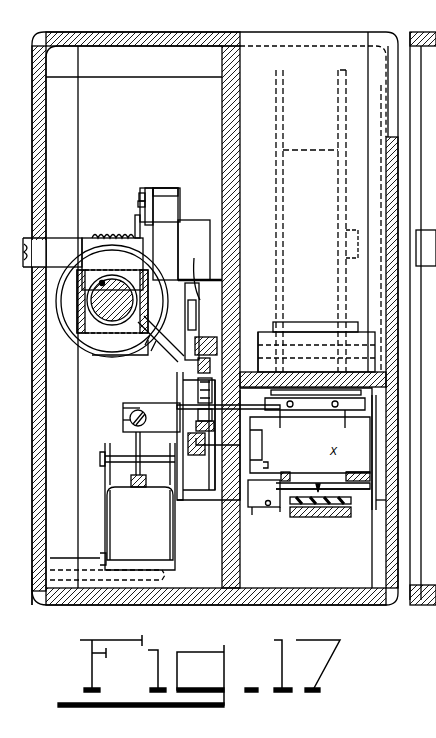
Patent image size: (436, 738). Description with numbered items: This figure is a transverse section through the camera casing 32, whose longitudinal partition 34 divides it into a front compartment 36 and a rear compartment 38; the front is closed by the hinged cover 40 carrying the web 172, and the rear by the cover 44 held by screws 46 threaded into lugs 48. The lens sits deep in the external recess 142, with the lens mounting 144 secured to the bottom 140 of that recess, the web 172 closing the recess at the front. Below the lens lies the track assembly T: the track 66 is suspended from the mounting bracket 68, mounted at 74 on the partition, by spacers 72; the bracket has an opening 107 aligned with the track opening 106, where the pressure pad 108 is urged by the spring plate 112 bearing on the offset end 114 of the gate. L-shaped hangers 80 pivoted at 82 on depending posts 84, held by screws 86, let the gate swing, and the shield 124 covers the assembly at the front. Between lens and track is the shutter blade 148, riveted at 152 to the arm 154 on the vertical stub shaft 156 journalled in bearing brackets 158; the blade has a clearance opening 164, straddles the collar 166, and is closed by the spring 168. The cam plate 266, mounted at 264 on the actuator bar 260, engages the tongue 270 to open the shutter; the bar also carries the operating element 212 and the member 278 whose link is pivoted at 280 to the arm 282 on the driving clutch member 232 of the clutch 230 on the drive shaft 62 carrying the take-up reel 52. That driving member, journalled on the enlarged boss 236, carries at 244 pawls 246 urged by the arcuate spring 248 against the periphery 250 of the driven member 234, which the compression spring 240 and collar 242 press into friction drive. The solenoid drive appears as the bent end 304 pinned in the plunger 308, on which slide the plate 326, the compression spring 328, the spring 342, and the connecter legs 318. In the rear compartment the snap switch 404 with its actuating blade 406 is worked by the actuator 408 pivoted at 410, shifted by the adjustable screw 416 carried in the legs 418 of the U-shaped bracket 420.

The casing 32 is at (178, 33).
The cover 44 is at (36, 36).
The cover 40 is at (392, 38).
The web 172 is at (393, 205).
The longitudinal partition 34 is at (242, 252).
The front compartment 36 is at (360, 575).
The screws 46 is at (60, 605).
The rear compartment 38 is at (98, 90).
The film take-up reel 52 is at (278, 70).
The external recess 142 is at (352, 95).
The lens mounting 144 is at (307, 320).
The bottom of external recess 140 is at (252, 350).
The drive shaft 62 is at (60, 247).
The driven clutch member 234 is at (128, 236).
The compression spring 240 is at (100, 232).
The collar 242 is at (122, 236).
The pivot 244 is at (138, 196).
The pawls 246 is at (138, 204).
The arcuate spring 248 is at (147, 190).
The clutch 230 is at (156, 180).
The driving clutch member 232 is at (176, 197).
The periphery 250 is at (155, 233).
The enlarged boss 236 is at (202, 225).
The arm 282 is at (178, 268).
The member 278 is at (195, 262).
The pivotal connection 280 is at (200, 285).
The parallel legs 318 is at (122, 336).
The plunger 308 is at (112, 290).
The compression spring 328 is at (100, 282).
The compression spring 342 is at (78, 352).
The plate 326 is at (95, 360).
The outwardly bent end 304 is at (165, 350).
The actuator bar 260 is at (180, 503).
The operating element 212 is at (210, 496).
The bearing brackets 158 is at (207, 458).
The vertical stub shaft 156 is at (197, 388).
The combined torsion and compression spring 168 is at (197, 393).
The cam plate 266 is at (195, 407).
The collar 166 is at (200, 417).
The clearance opening 164 is at (211, 424).
The mounting 264 is at (185, 443).
The tongue 270 is at (145, 404).
The adjustable screw 416 is at (130, 419).
The legs 418 is at (126, 426).
The U-shaped bracket 420 is at (117, 409).
The pivot mounting 410 is at (118, 460).
The switch actuator 408 is at (170, 477).
The actuating blade 406 is at (138, 490).
The snap switch 404 is at (118, 517).
The lugs 48 is at (91, 556).
The shutter blade 148 is at (316, 396).
The rivets 152 is at (325, 408).
The arm 154 is at (282, 418).
The mounting 74 is at (262, 444).
The screws 86 is at (268, 466).
The mounting bracket 68 is at (285, 472).
The opening 107 is at (300, 483).
The pressure pad 108 is at (314, 489).
The opening 106 is at (330, 490).
The spring plate 112 is at (302, 506).
The offset end 114 is at (328, 512).
The depending posts 84 is at (262, 490).
The pivot 82 is at (255, 512).
The L-shaped hangers 80 is at (283, 510).
The spacers 72 is at (358, 470).
The shield 124 is at (376, 450).
The track 66 is at (380, 500).
The track assembly T is at (364, 512).